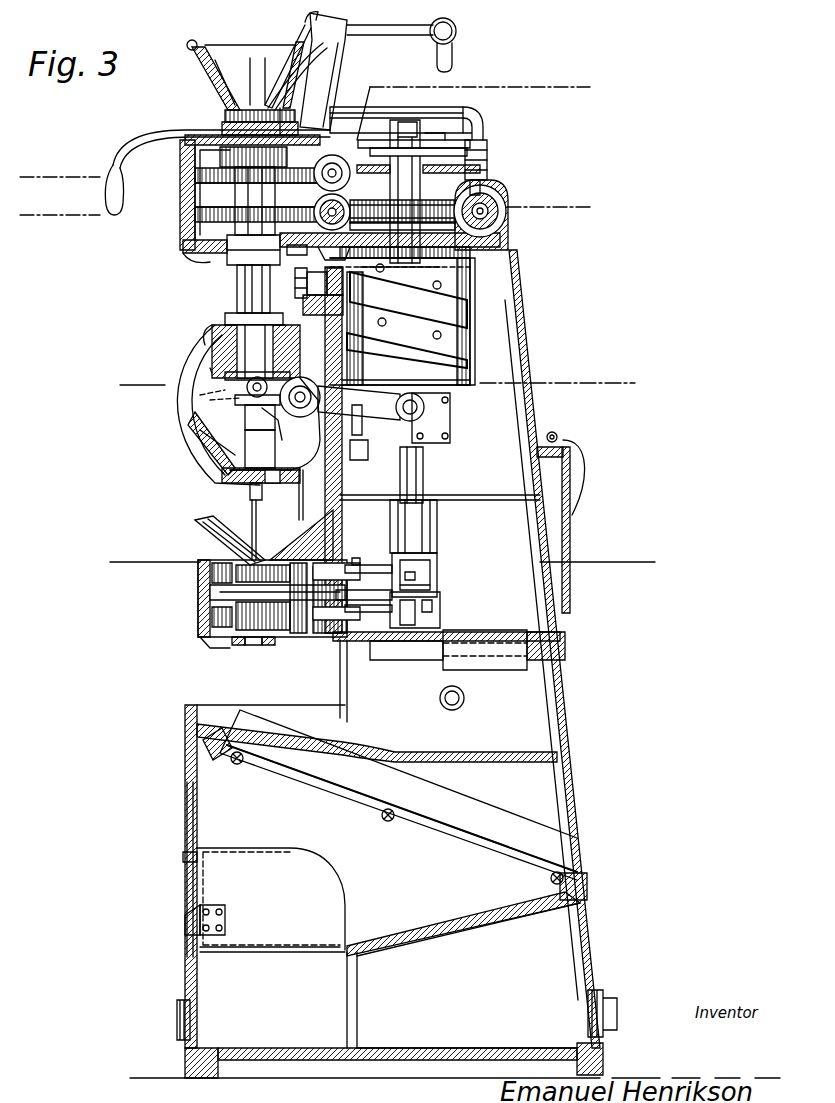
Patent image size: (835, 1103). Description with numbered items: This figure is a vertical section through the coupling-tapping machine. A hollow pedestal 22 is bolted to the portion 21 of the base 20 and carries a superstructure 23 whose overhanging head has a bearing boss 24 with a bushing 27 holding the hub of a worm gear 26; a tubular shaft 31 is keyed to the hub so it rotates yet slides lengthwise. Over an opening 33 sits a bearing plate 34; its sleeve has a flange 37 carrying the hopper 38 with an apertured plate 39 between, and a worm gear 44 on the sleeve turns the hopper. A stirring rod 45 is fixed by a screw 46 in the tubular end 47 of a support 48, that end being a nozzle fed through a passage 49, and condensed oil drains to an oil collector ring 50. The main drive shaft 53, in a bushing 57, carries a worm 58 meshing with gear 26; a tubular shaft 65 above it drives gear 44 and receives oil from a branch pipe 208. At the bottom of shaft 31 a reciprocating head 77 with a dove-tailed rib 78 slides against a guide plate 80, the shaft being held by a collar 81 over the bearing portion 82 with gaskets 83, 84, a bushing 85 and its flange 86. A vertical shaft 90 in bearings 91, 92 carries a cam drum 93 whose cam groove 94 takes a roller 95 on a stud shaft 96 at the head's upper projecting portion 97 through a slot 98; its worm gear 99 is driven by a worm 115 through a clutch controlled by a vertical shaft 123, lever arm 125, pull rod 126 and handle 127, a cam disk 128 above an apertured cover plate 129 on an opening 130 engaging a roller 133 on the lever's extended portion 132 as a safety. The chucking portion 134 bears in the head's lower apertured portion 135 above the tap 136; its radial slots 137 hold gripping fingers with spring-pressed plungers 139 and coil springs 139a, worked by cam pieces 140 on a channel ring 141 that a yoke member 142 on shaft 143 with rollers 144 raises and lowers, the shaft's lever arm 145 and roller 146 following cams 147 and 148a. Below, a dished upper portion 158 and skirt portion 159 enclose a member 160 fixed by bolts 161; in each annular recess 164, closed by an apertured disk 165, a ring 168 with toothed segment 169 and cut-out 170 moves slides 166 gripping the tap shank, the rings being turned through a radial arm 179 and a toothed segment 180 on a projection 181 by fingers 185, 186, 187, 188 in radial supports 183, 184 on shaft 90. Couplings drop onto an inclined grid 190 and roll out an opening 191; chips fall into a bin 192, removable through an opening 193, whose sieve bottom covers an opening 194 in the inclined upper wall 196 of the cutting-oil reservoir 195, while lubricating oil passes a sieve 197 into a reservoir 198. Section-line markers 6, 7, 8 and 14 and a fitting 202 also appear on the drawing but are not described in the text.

The section line 6- 6 is at (577, 221).
The section line 7- 7 is at (577, 94).
The section line 8- 8 is at (629, 398).
The section line 14- 14 is at (647, 578).
The base 20 is at (187, 768).
The portion of the base 21 is at (552, 660).
The hollow pedestal 22 is at (530, 336).
The superstructure 23 is at (505, 210).
The cylindrical bearing boss 24 is at (225, 262).
The worm gear 26 is at (205, 256).
The bushing 27 is at (232, 270).
The tubular shaft 31 is at (250, 295).
The opening 33 is at (205, 165).
The bearing plate 34 is at (222, 148).
The flange 37 is at (225, 115).
The hopper 38 is at (232, 52).
The apertured plate 39 is at (285, 112).
The worm gear 44 is at (215, 210).
The stationary stirring rod 45 is at (283, 72).
The screw 46 is at (305, 22).
The tubular end 47 is at (300, 40).
The support 48 is at (336, 67).
The passage 49 is at (340, 30).
The oil collector ring 50 is at (255, 192).
The main drive shaft 53 is at (318, 206).
The tubular bushing 57 is at (334, 251).
The worm 58 is at (357, 230).
The tubular shaft 65 is at (331, 162).
The reciprocating head 77 is at (210, 368).
The dove-tailed rib 78 is at (310, 462).
The guide plate 80 is at (336, 486).
The collar 81 is at (235, 319).
The cylindrical bearing portion 82 is at (208, 355).
The gasket 83 is at (215, 332).
The gasket 84 is at (215, 345).
The bushing 85 is at (255, 351).
The flange 86 is at (215, 378).
The vertical shaft 90 is at (424, 476).
The bearing 91 is at (388, 257).
The bearing 92 is at (426, 524).
The cam drum 93 is at (406, 374).
The cam groove 94 is at (468, 322).
The roller 95 is at (358, 286).
The stud shaft 96 is at (300, 290).
The upper projecting portion 97 is at (300, 270).
The slot 98 is at (342, 337).
The worm gear 99 is at (365, 206).
The worm 115 is at (505, 214).
The vertical shaft 123 is at (480, 135).
The lever arm 125 is at (430, 118).
The pull rod 126 is at (380, 127).
The handle 127 is at (125, 196).
The cam disk 128 is at (362, 160).
The apertured cover plate 129 is at (365, 175).
The opening 130 is at (445, 173).
The extended portion 132 is at (440, 143).
The roller 133 is at (418, 191).
The enlarged chucking portion 134 is at (235, 470).
The lower apertured portion 135 is at (210, 460).
The tap 136 is at (258, 490).
The radial slots 137 is at (245, 481).
The spring-pressed plungers 139 is at (258, 440).
The coil springs 139a is at (215, 445).
The cam pieces 140 is at (258, 425).
The channel ring 141 is at (250, 405).
The yoke member 142 is at (270, 418).
The shaft 143 is at (298, 380).
The rollers 144 is at (200, 395).
The lever arm 145 is at (358, 418).
The roller 146 is at (425, 390).
The cam 147 is at (450, 421).
The cam 148a is at (355, 452).
The dished upper portion 158 is at (255, 521).
The depending skirt portion 159 is at (205, 598).
The member 160 is at (225, 586).
The bolts 161 is at (230, 634).
The annular recess 164 is at (295, 633).
The apertured disk 165 is at (205, 637).
The slides 166 is at (265, 630).
The ring 168 is at (215, 616).
The toothed segment 169 is at (325, 633).
The cut-out 170 is at (252, 640).
The radial arm 179 is at (345, 560).
The toothed segment 180 is at (352, 612).
The projection 181 is at (348, 598).
The radial support 183 is at (427, 577).
The radial support 184 is at (432, 617).
The projecting finger 185 is at (420, 566).
The projecting finger 186 is at (420, 586).
The projecting finger 187 is at (446, 652).
The projecting finger 188 is at (433, 605).
The inclined grid 190 is at (300, 777).
The opening 191 is at (573, 790).
The bin 192 is at (265, 899).
The opening 193 is at (190, 822).
The opening 194 is at (264, 953).
The reservoir 195 is at (468, 975).
The upper wall 196 is at (418, 925).
The sieve 197 is at (478, 632).
The reservoir 198 is at (469, 700).
The pin 202 is at (456, 52).
The branch pipe 208 is at (350, 113).